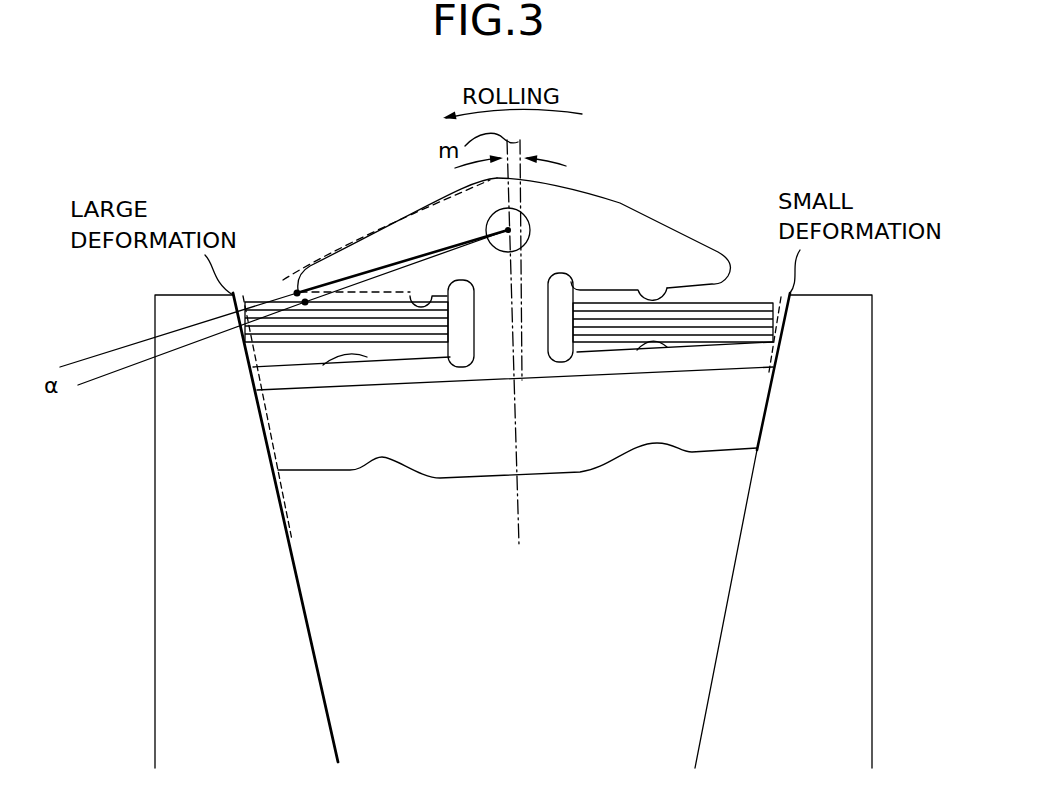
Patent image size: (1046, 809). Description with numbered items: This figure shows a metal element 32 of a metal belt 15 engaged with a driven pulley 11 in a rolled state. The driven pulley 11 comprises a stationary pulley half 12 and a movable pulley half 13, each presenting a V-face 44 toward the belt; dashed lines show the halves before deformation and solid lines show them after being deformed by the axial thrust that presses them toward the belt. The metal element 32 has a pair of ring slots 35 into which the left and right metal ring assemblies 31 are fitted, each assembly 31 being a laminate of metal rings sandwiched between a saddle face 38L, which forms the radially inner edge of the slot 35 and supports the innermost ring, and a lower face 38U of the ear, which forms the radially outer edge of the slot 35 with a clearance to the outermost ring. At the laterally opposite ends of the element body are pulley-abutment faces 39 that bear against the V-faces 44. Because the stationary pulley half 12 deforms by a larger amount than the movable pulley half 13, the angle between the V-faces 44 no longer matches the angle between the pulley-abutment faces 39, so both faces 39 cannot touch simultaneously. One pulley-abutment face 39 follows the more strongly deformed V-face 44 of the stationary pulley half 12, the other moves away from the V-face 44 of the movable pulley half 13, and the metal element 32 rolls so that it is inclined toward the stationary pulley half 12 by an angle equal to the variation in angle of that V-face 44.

The driven pulley 11 is at (528, 718).
The stationary pulley half 12 is at (263, 710).
The movable pulley half 13 is at (748, 692).
The metal belt 15 is at (368, 200).
The metal ring assembly 31 is at (263, 285).
The metal element 32 is at (628, 190).
The ring slot 35 is at (463, 355).
The lower face of the ear 38U is at (412, 295).
The saddle face 38L is at (352, 360).
The pulley-abutment face 39 is at (262, 408).
The V-face 44 is at (307, 600).